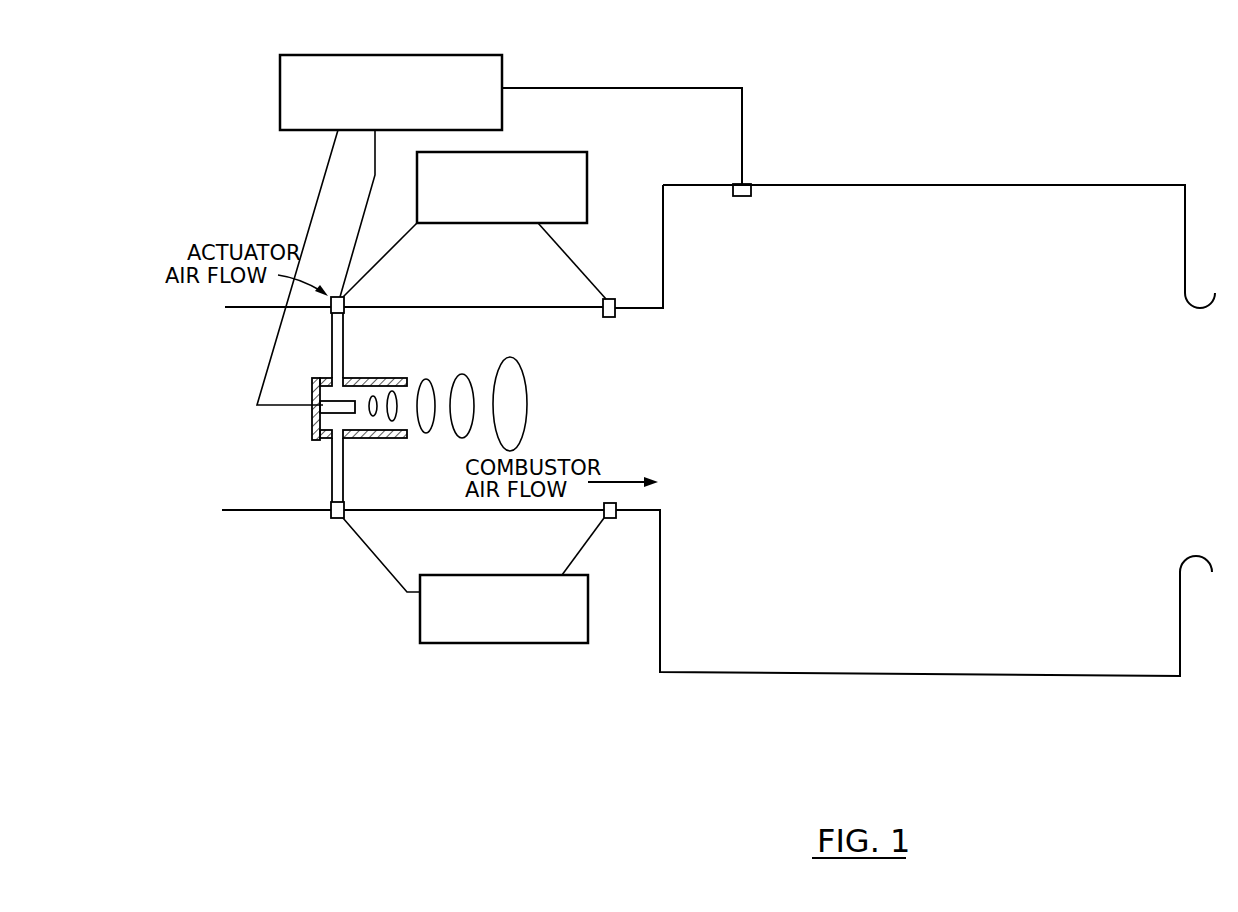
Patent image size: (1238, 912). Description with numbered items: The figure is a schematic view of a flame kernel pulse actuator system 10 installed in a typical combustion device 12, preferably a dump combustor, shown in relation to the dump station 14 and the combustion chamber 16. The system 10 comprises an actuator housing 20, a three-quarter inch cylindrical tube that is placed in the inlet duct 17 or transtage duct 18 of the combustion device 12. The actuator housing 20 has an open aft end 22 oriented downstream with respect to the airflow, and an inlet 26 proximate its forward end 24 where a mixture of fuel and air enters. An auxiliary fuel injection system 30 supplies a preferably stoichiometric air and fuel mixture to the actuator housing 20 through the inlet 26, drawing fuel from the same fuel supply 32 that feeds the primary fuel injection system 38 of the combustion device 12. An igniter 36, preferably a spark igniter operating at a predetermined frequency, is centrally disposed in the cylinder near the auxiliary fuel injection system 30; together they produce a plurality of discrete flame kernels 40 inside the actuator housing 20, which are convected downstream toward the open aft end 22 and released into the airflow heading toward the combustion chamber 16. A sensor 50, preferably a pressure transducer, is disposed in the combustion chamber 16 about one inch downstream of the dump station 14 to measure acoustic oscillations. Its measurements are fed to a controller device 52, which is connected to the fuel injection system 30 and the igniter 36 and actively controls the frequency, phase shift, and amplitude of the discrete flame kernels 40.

The flame kernel pulse actuator system 10 is at (764, 72).
The combustion device 12 is at (732, 690).
The dump station 14 is at (663, 542).
The combustion chamber 16 is at (863, 416).
The inlet duct 17 is at (204, 494).
The transtage duct 18 is at (370, 482).
The actuator housing 20 is at (352, 380).
The open aft end 22 is at (407, 428).
The forward end 24 is at (315, 418).
The inlet 26 is at (332, 362).
The auxiliary fuel injection system 30 is at (347, 300).
The fuel supply 32 is at (560, 152).
The igniter 36 is at (328, 432).
The primary fuel injection system 38 is at (614, 300).
The discrete flame kernels 40 is at (374, 395).
The sensor 50 is at (743, 198).
The controller device 52 is at (467, 54).